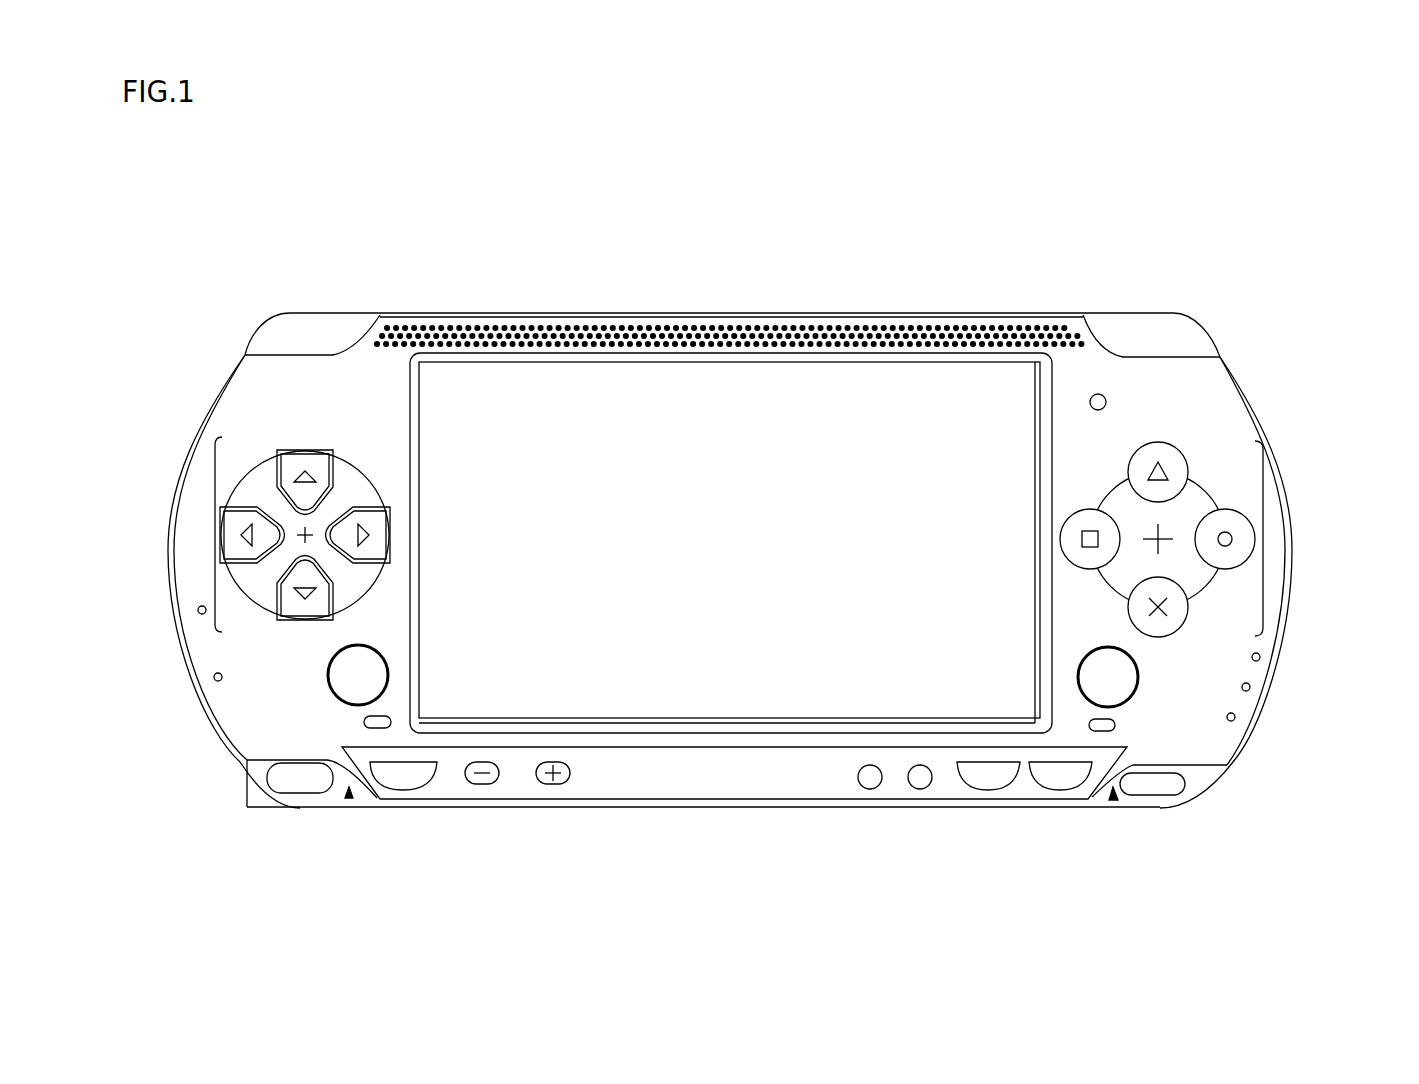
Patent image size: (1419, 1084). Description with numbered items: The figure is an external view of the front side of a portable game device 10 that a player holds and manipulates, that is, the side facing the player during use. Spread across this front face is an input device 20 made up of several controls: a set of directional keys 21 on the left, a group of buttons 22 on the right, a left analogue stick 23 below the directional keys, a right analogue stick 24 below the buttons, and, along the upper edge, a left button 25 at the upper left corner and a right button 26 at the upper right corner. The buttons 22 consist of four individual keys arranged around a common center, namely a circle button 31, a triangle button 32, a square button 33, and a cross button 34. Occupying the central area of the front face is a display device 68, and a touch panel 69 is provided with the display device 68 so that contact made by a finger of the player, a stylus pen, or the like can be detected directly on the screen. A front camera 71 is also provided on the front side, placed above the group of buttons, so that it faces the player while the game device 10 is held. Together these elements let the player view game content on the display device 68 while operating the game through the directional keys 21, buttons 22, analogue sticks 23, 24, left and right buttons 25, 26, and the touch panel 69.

The game device 10 is at (1147, 163).
The input device 20 is at (1342, 316).
The directional keys 21 is at (215, 533).
The buttons 22 is at (1264, 539).
The left analogue stick 23 is at (358, 704).
The right analogue stick 24 is at (1114, 708).
The left button 25 is at (280, 327).
The right button 26 is at (1198, 334).
The circle button 31 is at (1232, 508).
The triangle button 32 is at (1128, 455).
The square button 33 is at (1060, 539).
The cross button 34 is at (1128, 617).
The display device 68 is at (1015, 383).
The touch panel 69 is at (731, 543).
The front camera 71 is at (1107, 402).